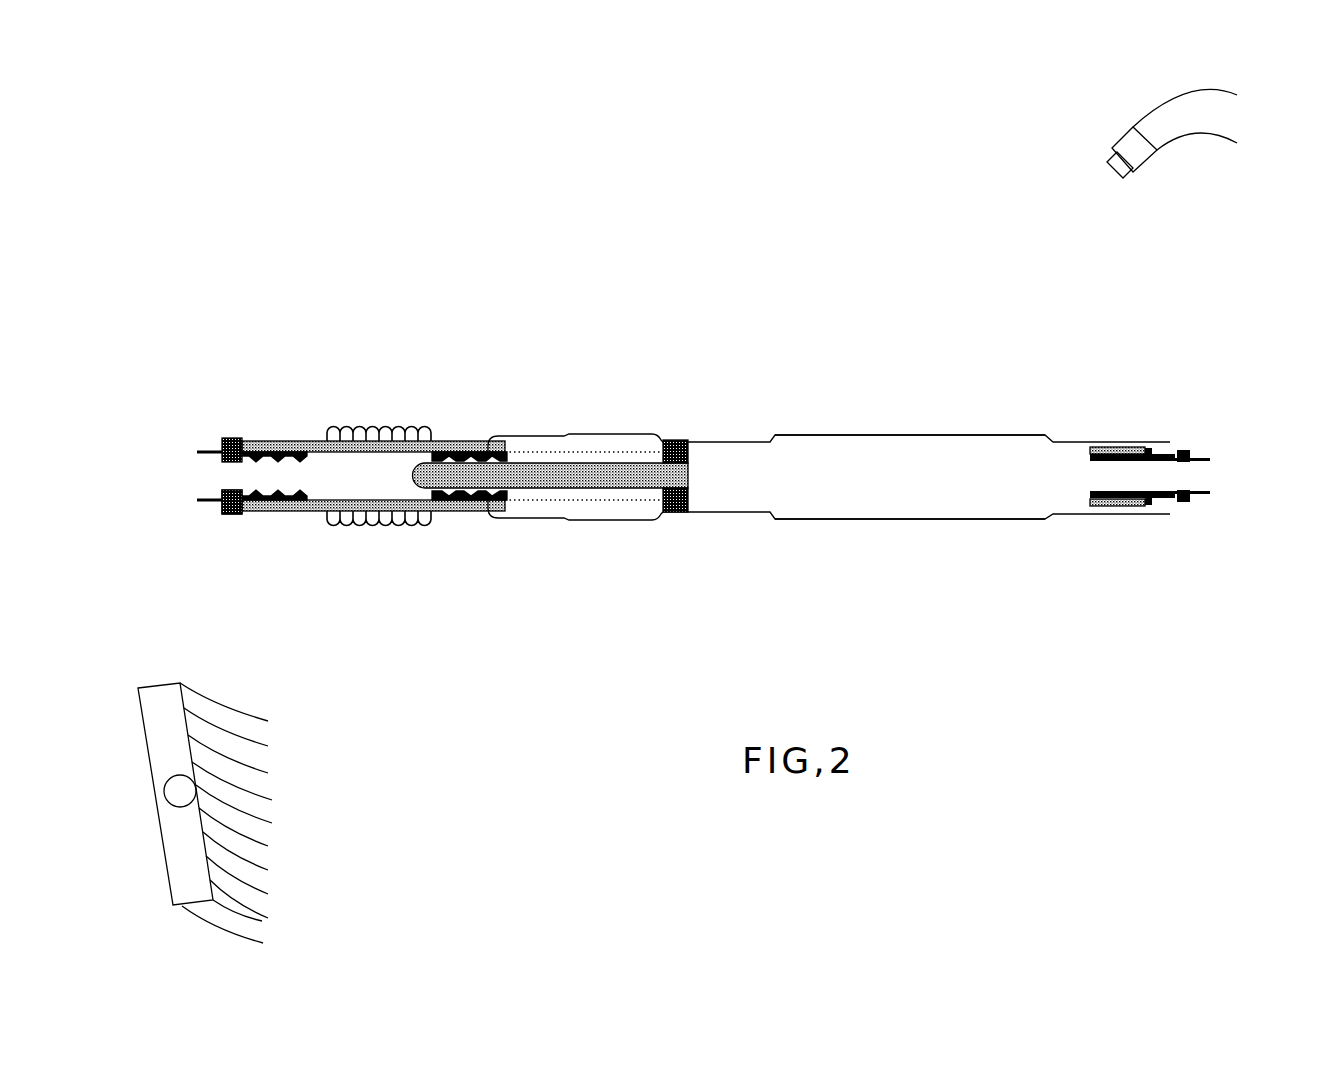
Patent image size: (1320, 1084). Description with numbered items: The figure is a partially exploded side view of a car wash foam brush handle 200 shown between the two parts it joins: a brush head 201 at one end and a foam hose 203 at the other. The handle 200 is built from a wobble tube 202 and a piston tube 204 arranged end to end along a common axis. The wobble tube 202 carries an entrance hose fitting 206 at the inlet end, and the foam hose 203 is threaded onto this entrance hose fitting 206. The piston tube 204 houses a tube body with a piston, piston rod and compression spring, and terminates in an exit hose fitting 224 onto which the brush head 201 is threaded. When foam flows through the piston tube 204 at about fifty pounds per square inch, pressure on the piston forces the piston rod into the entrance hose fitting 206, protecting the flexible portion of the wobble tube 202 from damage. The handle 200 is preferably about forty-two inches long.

The car wash foam brush handle 200 is at (645, 370).
The brush head 201 is at (155, 680).
The wobble tube 202 is at (307, 427).
The foam hose 203 is at (1190, 137).
The piston tube 204 is at (877, 421).
The entrance hose fitting 206 is at (222, 514).
The exit hose fitting 224 is at (1185, 448).